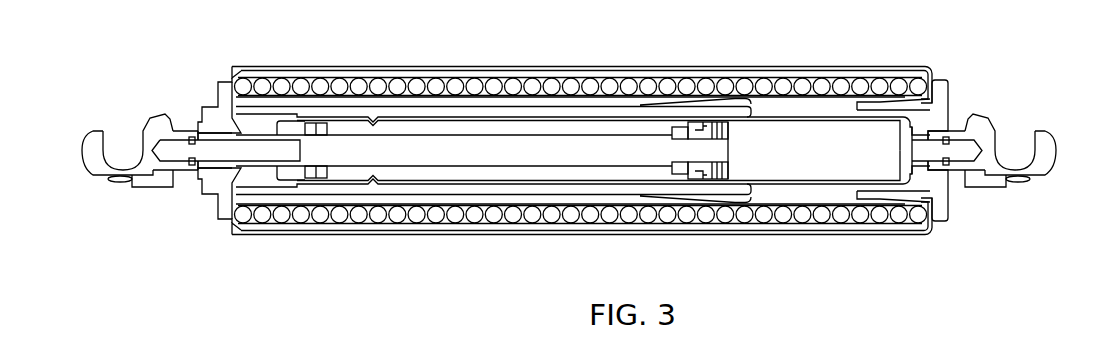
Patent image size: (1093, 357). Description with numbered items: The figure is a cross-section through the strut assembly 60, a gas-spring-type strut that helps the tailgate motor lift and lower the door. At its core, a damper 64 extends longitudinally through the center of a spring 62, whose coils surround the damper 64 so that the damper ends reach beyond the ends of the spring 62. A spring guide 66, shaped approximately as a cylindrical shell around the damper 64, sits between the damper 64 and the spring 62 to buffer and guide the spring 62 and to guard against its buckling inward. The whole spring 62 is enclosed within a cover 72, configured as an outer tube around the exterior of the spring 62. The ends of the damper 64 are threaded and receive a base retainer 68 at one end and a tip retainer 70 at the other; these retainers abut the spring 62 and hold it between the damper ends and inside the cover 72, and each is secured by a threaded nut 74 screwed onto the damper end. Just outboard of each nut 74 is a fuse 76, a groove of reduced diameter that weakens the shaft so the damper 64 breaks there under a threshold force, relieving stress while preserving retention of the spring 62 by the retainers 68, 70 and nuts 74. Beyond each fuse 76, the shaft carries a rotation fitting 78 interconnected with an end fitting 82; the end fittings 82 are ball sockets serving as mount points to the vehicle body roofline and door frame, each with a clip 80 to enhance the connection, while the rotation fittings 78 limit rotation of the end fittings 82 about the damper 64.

The strut assembly 60 is at (808, 56).
The spring 62 is at (415, 224).
The damper 64 is at (845, 208).
The spring guide 66 is at (290, 205).
The base retainer 68 is at (228, 215).
The tip retainer 70 is at (905, 225).
The cover 72 is at (752, 238).
The nut 74 is at (203, 170).
The fuse 76 is at (190, 134).
The rotation fitting 78 is at (150, 190).
The clip 80 is at (120, 184).
The end fitting 82 is at (95, 180).